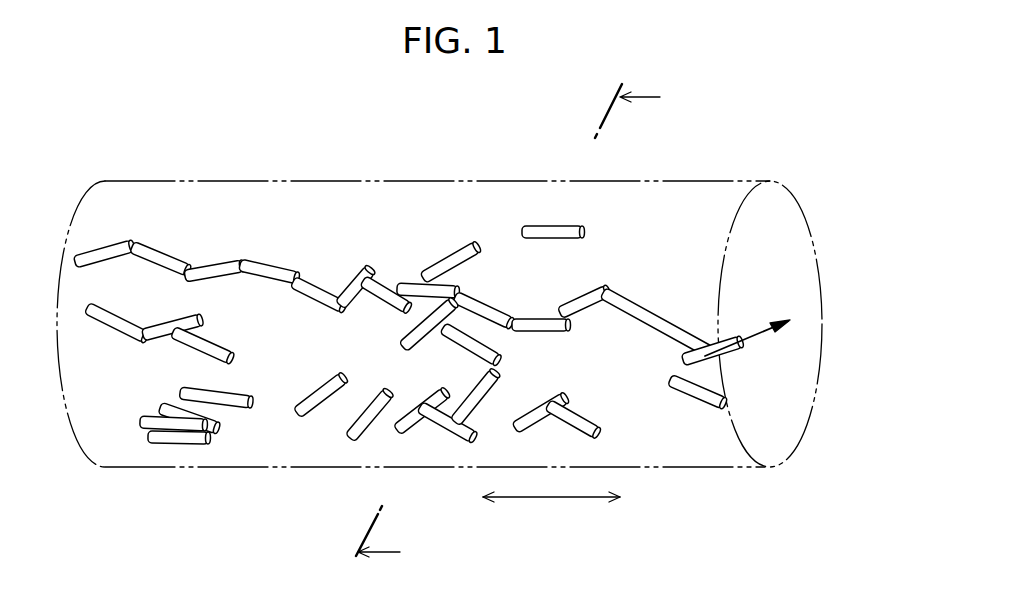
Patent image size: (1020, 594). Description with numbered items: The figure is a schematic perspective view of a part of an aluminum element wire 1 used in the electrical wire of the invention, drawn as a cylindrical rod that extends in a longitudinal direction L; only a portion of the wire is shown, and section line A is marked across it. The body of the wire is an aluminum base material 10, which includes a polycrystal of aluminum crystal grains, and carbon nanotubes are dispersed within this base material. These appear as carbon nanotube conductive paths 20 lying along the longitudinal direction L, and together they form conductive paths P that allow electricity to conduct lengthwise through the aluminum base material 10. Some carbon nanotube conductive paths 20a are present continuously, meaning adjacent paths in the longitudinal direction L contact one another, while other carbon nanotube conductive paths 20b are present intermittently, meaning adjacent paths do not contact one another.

The aluminum element wire 1 is at (781, 150).
The aluminum base material 10 is at (658, 408).
The carbon nanotube conductive paths 20 is at (408, 324).
The continuous carbon nanotube conductive paths 20a is at (173, 252).
The intermittent carbon nanotube conductive paths 20b is at (250, 404).
The conductive paths P is at (752, 343).
The longitudinal direction L is at (551, 510).
The section line A- A is at (518, 325).